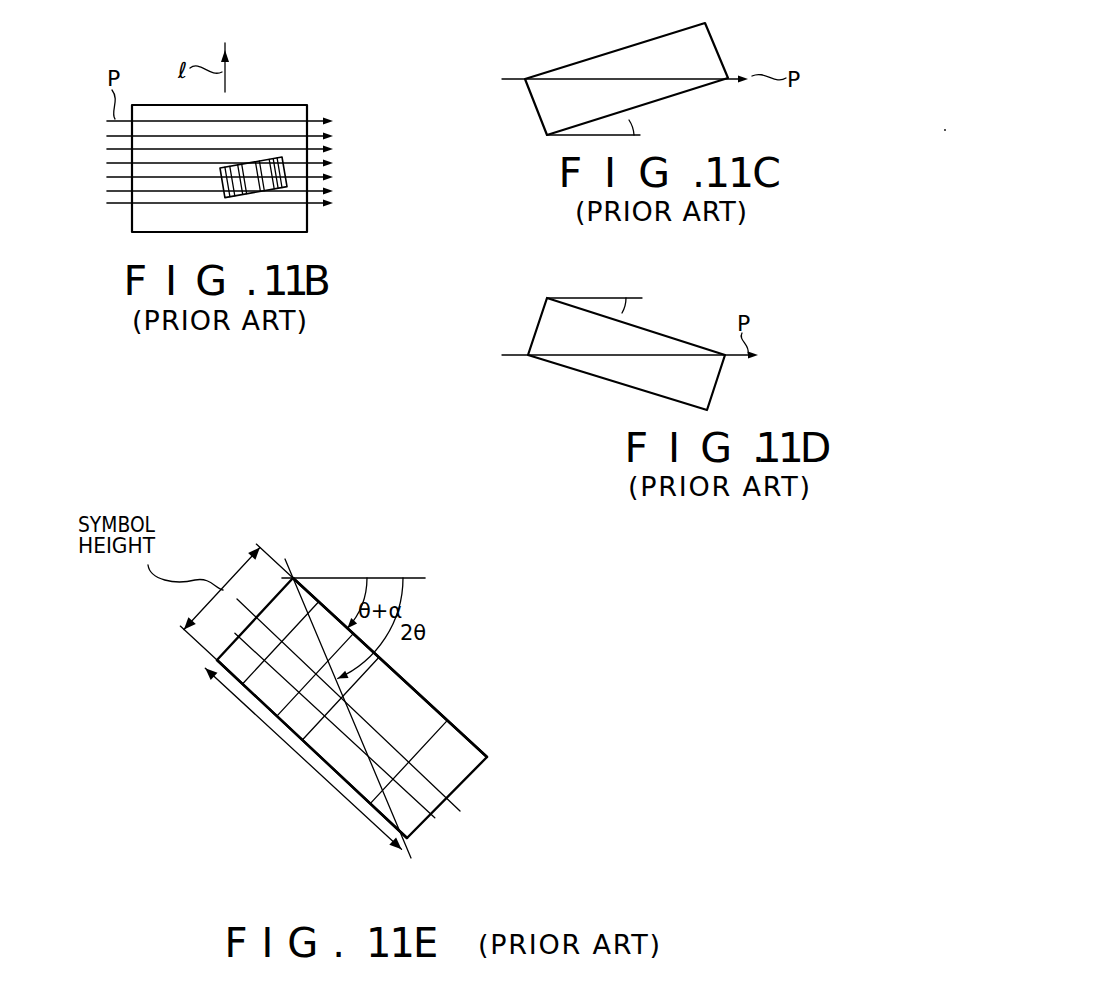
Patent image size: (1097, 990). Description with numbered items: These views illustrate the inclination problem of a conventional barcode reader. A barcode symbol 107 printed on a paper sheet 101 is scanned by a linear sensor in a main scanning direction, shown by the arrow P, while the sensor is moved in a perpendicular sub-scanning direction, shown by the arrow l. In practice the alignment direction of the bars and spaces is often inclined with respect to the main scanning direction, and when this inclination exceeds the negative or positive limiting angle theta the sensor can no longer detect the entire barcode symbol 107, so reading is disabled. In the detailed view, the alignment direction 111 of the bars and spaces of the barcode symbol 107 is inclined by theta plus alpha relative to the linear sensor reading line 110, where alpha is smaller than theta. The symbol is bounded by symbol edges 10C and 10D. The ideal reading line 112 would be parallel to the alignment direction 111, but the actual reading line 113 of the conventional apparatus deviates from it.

In FIG. 11B, the paper sheet 101 is at (295, 225).
In FIG. 11B, the barcode symbol 107 is at (287, 170).
In FIG. 11C, the barcode symbol 107 is at (717, 42).
In FIG. 11D, the barcode symbol 107 is at (703, 388).
In FIG. 11E, the barcode symbol 107 is at (403, 707).
In FIG. 11E, the linear sensor reading line 110 is at (382, 578).
In FIG. 11E, the symbol edge 10C is at (448, 720).
In FIG. 11E, the symbol edge 10D is at (293, 735).
In FIG. 11E, the alignment direction of the bars and spaces 111 is at (240, 700).
In FIG. 11E, the ideal reading line 112 is at (456, 806).
In FIG. 11E, the actual reading line 113 is at (411, 850).